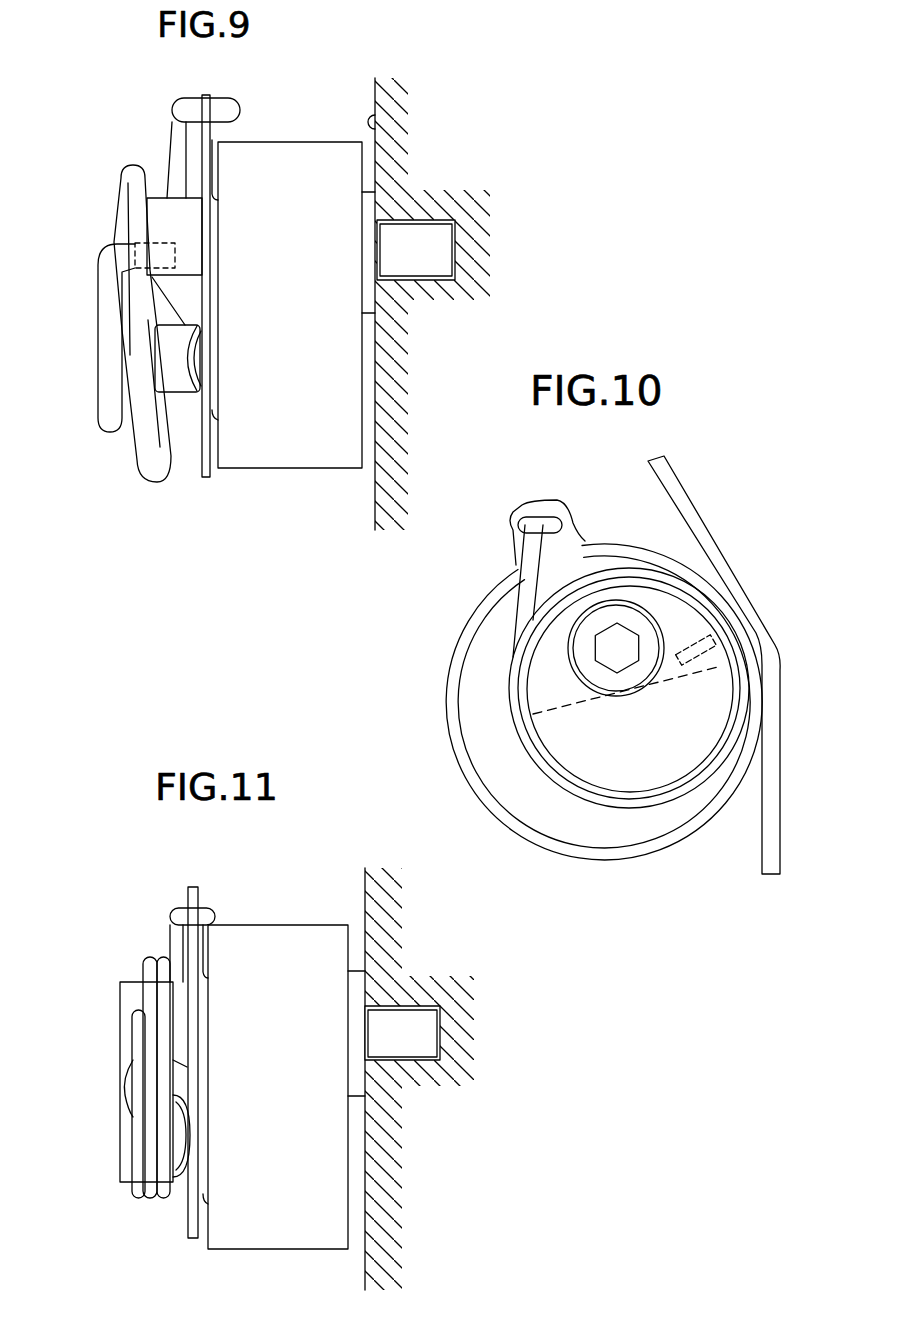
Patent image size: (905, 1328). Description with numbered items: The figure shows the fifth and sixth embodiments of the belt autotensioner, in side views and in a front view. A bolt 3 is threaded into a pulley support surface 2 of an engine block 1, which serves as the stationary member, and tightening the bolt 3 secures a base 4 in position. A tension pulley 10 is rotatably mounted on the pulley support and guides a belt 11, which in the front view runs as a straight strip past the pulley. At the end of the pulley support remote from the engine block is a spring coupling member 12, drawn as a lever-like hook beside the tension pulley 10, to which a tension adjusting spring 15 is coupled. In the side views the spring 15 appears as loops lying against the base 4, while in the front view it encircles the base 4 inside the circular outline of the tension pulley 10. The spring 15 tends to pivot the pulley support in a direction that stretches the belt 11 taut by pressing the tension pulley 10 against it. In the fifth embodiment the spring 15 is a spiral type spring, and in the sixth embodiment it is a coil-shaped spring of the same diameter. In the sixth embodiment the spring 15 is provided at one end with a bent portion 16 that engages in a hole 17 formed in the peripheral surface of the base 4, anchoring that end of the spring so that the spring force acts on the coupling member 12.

In FIG. 9, the engine block 1 is at (391, 86).
In FIG. 9, the pulley support surface 2 is at (380, 122).
In FIG. 9, the bolt 3 is at (428, 258).
In FIG. 11, the bolt 3 is at (419, 1031).
In FIG. 9, the base 4 is at (163, 222).
In FIG. 10, the base 4 is at (601, 765).
In FIG. 11, the base 4 is at (127, 1005).
In FIG. 9, the tension pulley 10 is at (314, 160).
In FIG. 10, the tension pulley 10 is at (455, 655).
In FIG. 11, the tension pulley 10 is at (262, 937).
In FIG. 10, the belt 11 is at (773, 759).
In FIG. 9, the spring coupling member 12 is at (202, 138).
In FIG. 10, the spring coupling member 12 is at (582, 543).
In FIG. 11, the spring coupling member 12 is at (192, 1013).
In FIG. 9, the tension adjusting spring 15 is at (130, 186).
In FIG. 10, the tension adjusting spring 15 is at (667, 798).
In FIG. 11, the tension adjusting spring 15 is at (150, 1185).
In FIG. 10, the bent portion 16 is at (699, 654).
In FIG. 10, the hole 17 is at (683, 638).